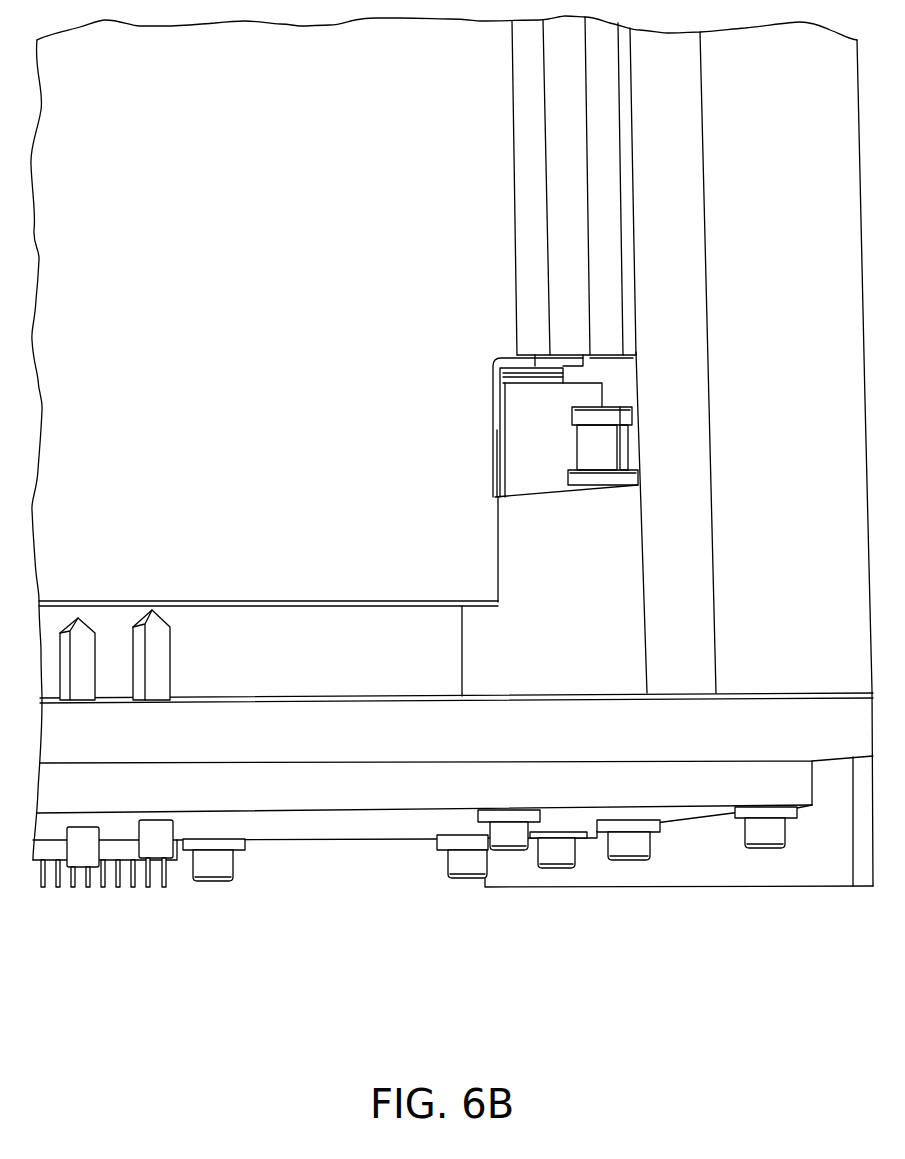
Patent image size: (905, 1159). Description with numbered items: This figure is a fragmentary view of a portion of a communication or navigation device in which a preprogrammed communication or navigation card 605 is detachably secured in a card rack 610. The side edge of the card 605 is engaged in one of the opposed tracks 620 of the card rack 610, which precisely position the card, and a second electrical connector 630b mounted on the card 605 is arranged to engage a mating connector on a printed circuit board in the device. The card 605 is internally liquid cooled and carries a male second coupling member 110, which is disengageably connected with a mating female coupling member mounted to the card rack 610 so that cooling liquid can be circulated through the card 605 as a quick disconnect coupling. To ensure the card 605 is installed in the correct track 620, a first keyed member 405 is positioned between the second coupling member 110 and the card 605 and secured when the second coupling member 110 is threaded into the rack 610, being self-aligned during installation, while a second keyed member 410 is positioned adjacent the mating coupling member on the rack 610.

The second coupling member 110 is at (550, 376).
The first keyed member 405 is at (565, 362).
The second keyed member 410 is at (545, 474).
The preprogrammed communication or navigation card 605 is at (470, 550).
The card rack 610 is at (807, 641).
The tracks 620 is at (613, 247).
The second electrical connector 630b is at (450, 670).